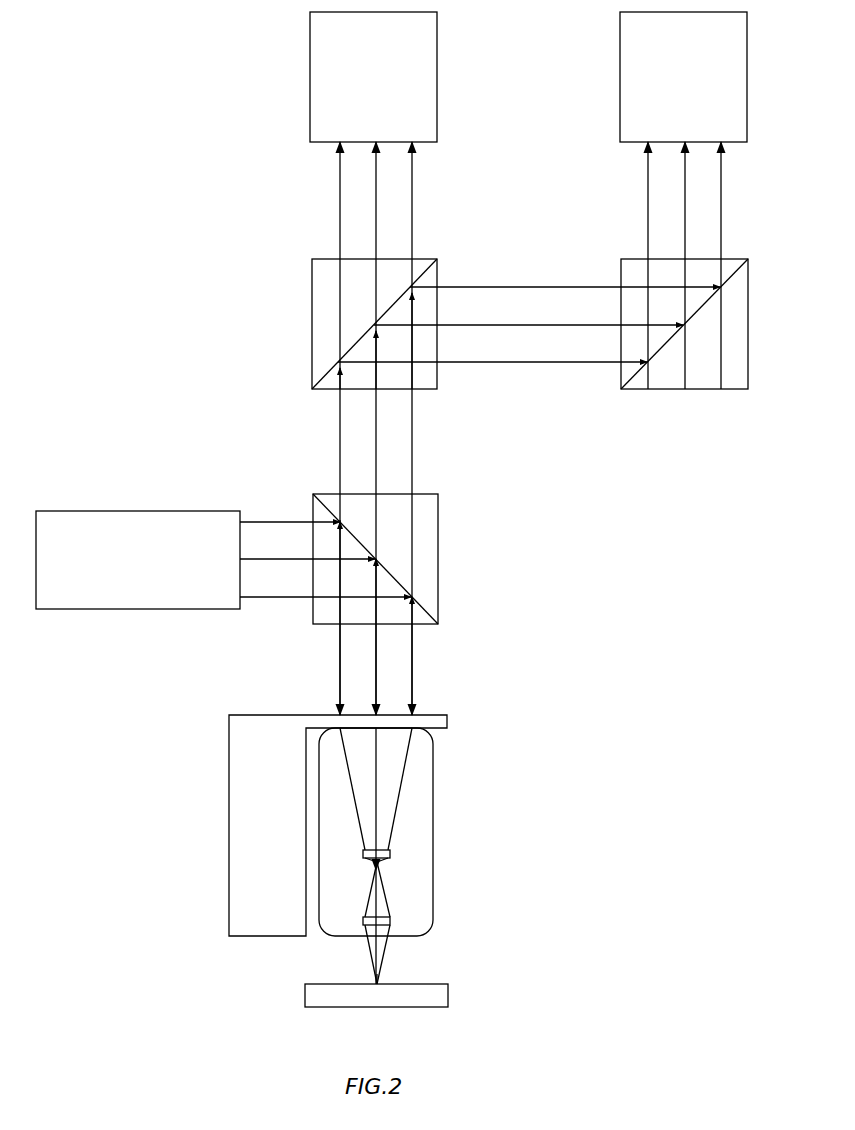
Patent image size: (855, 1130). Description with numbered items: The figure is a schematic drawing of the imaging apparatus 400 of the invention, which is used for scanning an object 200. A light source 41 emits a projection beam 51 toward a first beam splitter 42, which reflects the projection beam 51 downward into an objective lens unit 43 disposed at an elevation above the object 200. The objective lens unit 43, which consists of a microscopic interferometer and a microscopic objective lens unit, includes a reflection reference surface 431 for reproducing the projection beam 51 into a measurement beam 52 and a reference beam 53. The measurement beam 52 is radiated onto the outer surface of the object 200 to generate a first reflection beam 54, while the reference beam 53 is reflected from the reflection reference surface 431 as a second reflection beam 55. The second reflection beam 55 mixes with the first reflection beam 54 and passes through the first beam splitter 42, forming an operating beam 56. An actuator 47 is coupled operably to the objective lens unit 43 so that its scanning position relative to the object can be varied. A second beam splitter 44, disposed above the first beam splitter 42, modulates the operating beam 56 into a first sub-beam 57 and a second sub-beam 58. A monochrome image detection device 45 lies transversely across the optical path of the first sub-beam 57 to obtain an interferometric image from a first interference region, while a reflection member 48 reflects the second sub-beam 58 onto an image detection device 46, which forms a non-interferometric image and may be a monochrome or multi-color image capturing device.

The imaging apparatus 400 is at (158, 133).
The light source 41 is at (143, 522).
The first beam splitter 42 is at (445, 550).
The objective lens unit 43 is at (422, 812).
The reflection reference surface 431 is at (370, 924).
The second beam splitter 44 is at (323, 306).
The monochrome image detection device 45 is at (322, 73).
The image detection device 46 is at (737, 72).
The actuator 47 is at (242, 823).
The reflection member 48 is at (737, 340).
The projection beam 51 is at (271, 598).
The measurement beam 52 is at (380, 975).
The reference beam 53 is at (380, 876).
The first reflection beam 54 is at (374, 974).
The second reflection beam 55 is at (372, 878).
The operating beam 56 is at (412, 437).
The first sub-beam 57 is at (412, 197).
The second sub-beam 58 is at (545, 287).
The object 200 is at (437, 997).